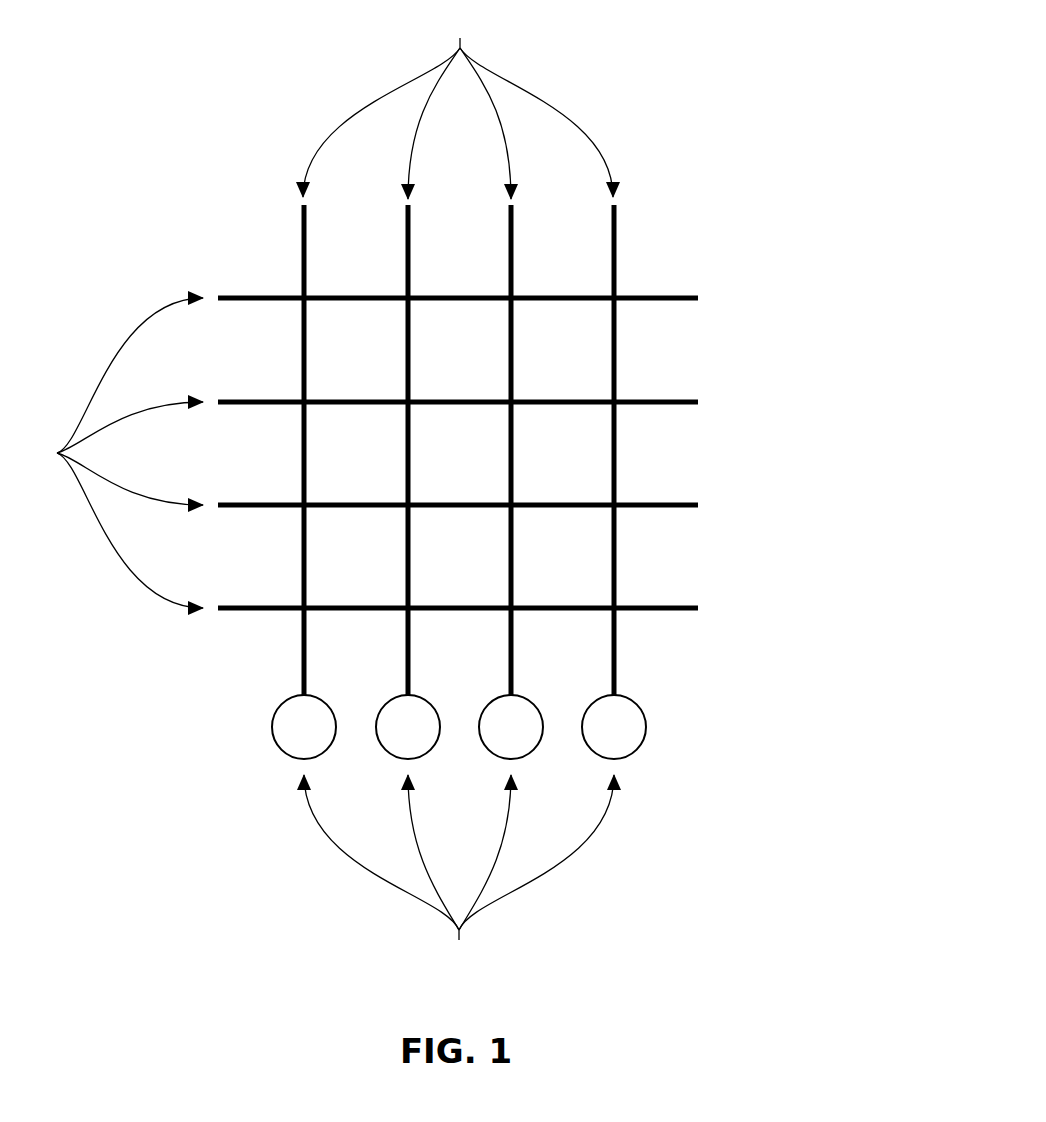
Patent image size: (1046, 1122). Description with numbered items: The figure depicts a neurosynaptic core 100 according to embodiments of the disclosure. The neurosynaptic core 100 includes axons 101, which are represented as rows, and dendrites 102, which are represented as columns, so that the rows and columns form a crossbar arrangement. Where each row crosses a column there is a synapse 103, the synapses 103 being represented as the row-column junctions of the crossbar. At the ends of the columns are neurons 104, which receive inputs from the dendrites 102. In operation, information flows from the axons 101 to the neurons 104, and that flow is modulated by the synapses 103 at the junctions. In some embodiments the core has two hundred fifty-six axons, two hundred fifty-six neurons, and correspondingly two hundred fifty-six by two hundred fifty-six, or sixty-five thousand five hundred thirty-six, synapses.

The neurosynaptic core 100 is at (201, 127).
The axons 101 is at (57, 453).
The dendrites 102 is at (458, 351).
The synapses 103 is at (631, 280).
The neurons 104 is at (459, 837).